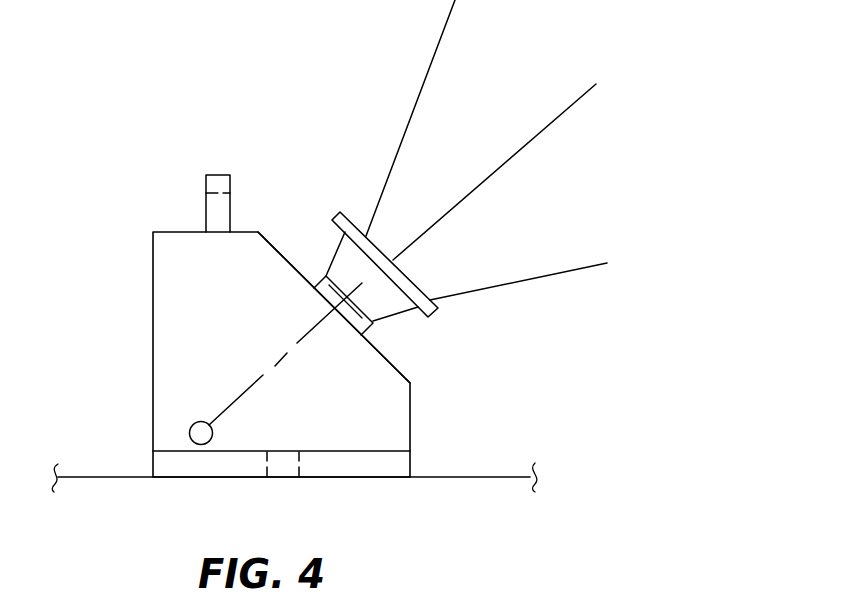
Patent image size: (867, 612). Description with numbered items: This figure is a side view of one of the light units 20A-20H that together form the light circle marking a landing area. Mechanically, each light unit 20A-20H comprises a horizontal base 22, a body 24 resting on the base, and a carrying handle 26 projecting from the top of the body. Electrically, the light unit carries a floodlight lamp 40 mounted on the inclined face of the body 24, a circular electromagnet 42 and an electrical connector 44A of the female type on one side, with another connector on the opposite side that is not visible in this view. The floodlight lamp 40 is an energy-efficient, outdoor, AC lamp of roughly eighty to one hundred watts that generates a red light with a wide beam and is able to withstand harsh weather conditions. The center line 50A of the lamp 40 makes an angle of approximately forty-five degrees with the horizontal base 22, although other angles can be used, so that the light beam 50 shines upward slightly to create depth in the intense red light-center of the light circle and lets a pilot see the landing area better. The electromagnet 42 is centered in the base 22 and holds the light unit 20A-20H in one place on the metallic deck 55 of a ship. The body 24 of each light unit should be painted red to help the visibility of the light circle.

The light unit 20A-20H is at (168, 216).
The base 22 is at (168, 464).
The body 24 is at (380, 375).
The carrying handle 26 is at (220, 175).
The floodlight lamp 40 is at (357, 220).
The circular electromagnet 42 is at (285, 470).
The electrical connector 44A is at (198, 421).
The light beam 50 is at (418, 59).
The center line 50A is at (303, 338).
The metallic deck 55 is at (482, 476).